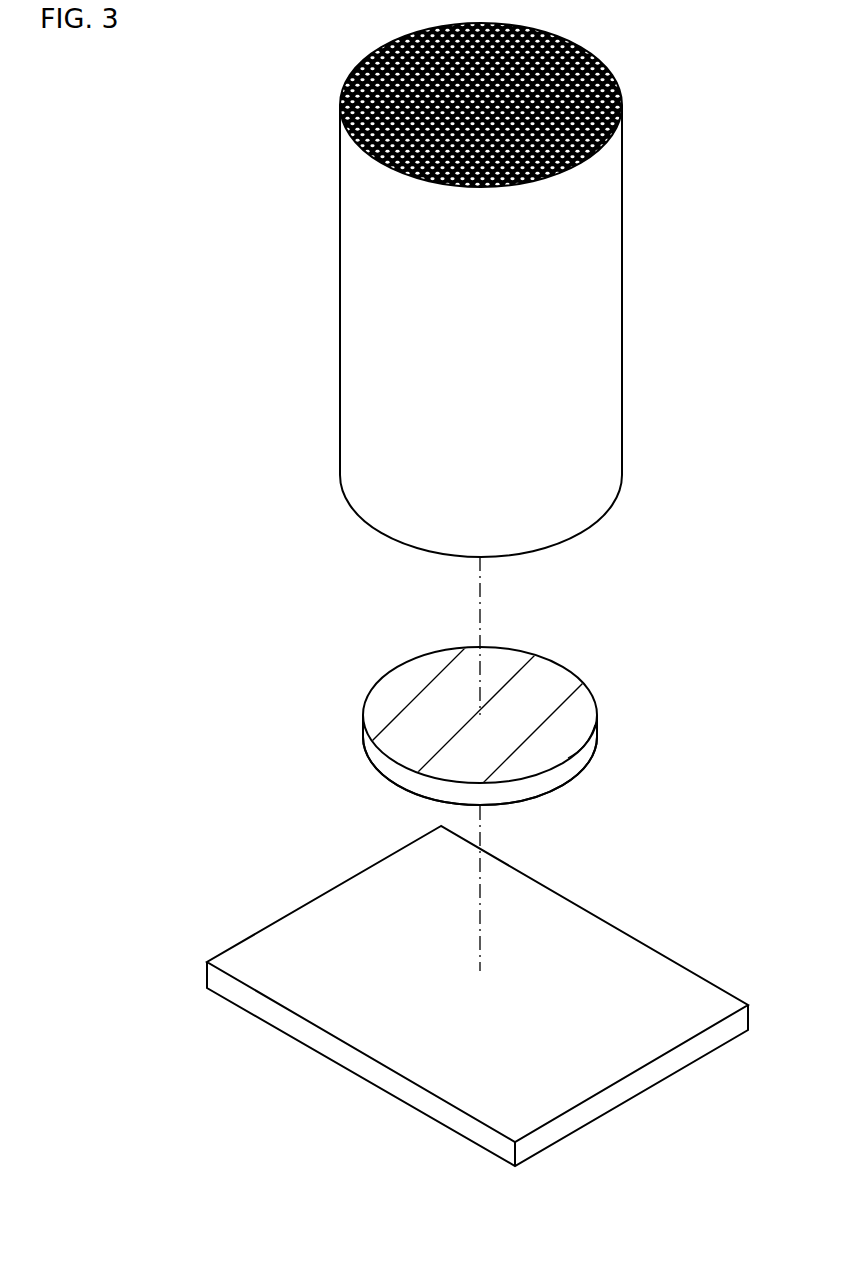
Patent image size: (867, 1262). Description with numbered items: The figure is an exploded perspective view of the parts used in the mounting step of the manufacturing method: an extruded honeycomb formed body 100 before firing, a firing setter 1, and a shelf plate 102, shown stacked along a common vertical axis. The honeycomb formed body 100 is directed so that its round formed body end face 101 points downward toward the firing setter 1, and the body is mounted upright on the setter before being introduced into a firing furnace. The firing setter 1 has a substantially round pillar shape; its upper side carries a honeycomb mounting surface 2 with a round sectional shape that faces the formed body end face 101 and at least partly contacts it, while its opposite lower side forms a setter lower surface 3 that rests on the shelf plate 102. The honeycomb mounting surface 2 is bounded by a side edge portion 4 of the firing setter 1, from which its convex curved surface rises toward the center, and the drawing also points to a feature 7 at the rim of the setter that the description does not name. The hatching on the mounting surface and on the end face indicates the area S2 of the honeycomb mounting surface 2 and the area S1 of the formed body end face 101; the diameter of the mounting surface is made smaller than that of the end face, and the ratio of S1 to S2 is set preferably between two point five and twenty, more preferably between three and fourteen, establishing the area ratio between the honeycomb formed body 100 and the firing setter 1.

The honeycomb formed body 100 is at (218, 282).
The formed body end face 101 is at (593, 527).
The area of the formed body end face S1 is at (619, 81).
The firing setter 1 is at (297, 690).
The honeycomb mounting surface 2 is at (545, 680).
The area of the honeycomb mounting surface S2 is at (479, 710).
The setter lower surface 3 is at (565, 783).
The side edge portion 4 is at (388, 768).
The edge portion 7 is at (597, 726).
The shelf plate 102 is at (672, 985).